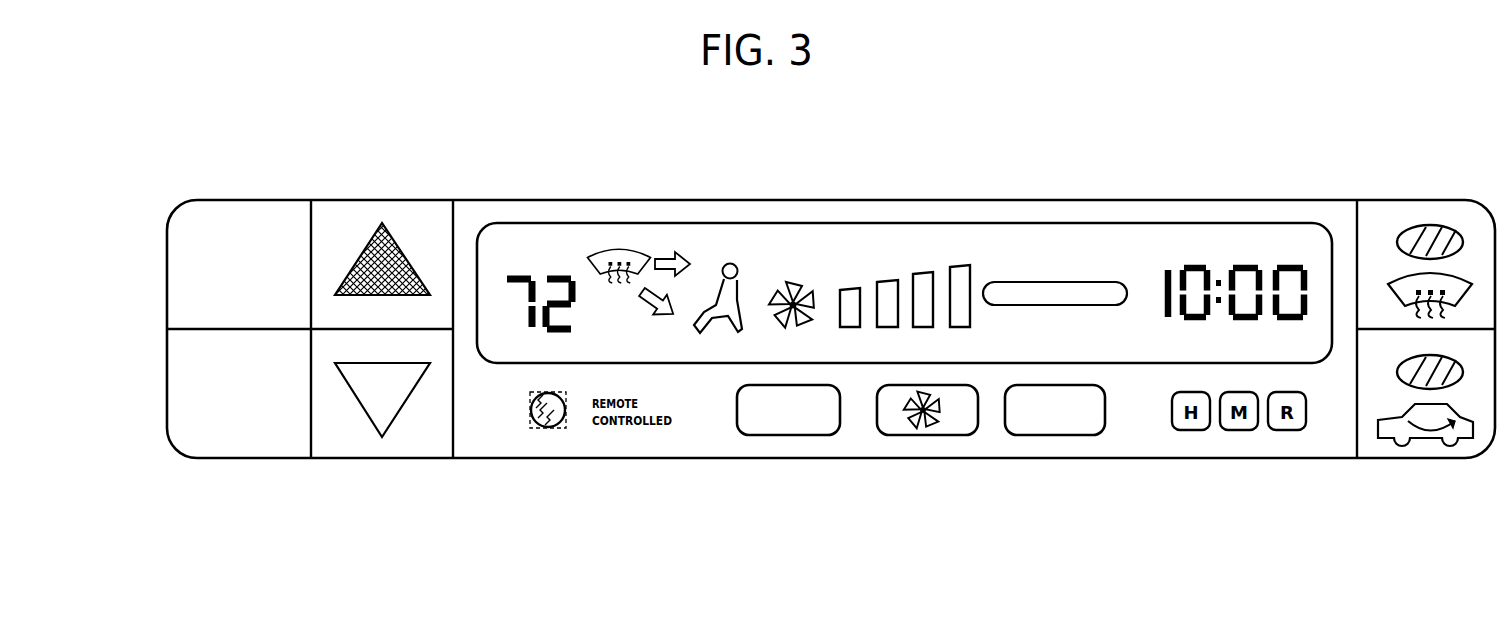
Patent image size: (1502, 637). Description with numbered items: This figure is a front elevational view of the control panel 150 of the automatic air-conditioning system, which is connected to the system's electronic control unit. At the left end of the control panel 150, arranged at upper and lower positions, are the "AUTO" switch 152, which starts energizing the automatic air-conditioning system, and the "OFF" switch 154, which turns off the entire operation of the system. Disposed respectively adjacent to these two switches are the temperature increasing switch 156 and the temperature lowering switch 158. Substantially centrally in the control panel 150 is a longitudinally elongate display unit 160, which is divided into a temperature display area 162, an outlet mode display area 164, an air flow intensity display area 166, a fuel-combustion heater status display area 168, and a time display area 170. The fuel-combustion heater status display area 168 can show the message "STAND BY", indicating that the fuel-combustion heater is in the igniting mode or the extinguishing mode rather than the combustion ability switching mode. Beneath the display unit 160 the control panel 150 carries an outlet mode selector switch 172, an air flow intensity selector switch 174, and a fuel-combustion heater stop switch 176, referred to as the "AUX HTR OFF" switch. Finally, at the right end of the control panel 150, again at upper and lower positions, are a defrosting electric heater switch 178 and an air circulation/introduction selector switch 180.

The control panel 150 is at (712, 145).
The "AUTO" switch 152 is at (225, 215).
The "OFF" switch 154 is at (252, 448).
The temperature increasing switch 156 is at (372, 215).
The temperature lowering switch 158 is at (418, 433).
The display unit 160 is at (955, 224).
The temperature display area 162 is at (548, 222).
The outlet mode display area 164 is at (660, 235).
The air flow intensity display area 166 is at (862, 267).
The fuel-combustion heater status display area 168 is at (1113, 263).
The time display area 170 is at (1238, 235).
The outlet mode selector switch 172 is at (773, 430).
The air flow intensity selector switch 174 is at (953, 430).
The fuel-combustion heater stop switch 176 is at (1082, 430).
The defrosting electric heater switch 178 is at (1385, 218).
The air circulation/introduction selector switch 180 is at (1385, 455).